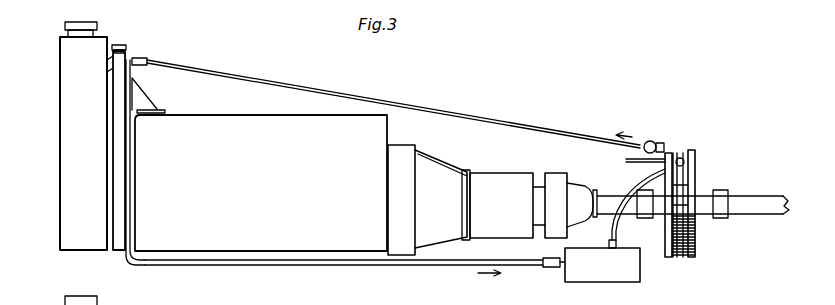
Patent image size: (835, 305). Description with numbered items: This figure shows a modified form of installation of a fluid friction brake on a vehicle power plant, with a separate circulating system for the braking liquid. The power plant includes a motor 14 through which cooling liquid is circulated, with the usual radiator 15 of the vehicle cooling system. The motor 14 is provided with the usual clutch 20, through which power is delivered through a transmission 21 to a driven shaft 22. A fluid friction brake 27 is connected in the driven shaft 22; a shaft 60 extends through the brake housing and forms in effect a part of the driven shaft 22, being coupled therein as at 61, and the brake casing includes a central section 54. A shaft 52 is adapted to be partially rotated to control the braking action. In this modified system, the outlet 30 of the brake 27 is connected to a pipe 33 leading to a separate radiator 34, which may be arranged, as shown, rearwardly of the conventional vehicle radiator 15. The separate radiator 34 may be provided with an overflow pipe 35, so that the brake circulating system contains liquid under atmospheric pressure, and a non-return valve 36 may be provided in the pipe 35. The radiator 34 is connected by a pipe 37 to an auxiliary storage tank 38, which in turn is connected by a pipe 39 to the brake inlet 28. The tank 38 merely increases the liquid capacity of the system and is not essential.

The motor 14 is at (259, 164).
The radiator 15 is at (56, 225).
The clutch 20 is at (427, 200).
The transmission 21 is at (514, 205).
The driven shaft 22 is at (617, 206).
The fluid friction brake 27 is at (697, 161).
The fluid intake 28 is at (690, 181).
The outlet 30 is at (701, 200).
The pipe 33 is at (525, 122).
The separate radiator 34 is at (118, 112).
The overflow pipe 35 is at (128, 268).
The non-return valve 36 is at (650, 141).
The pipe 37 is at (372, 266).
The auxiliary storage tank 38 is at (602, 265).
The pipe 39 is at (640, 178).
The shaft 52 is at (626, 160).
The central section 54 is at (680, 258).
The shaft 60 is at (708, 220).
The coupling 61 is at (645, 220).